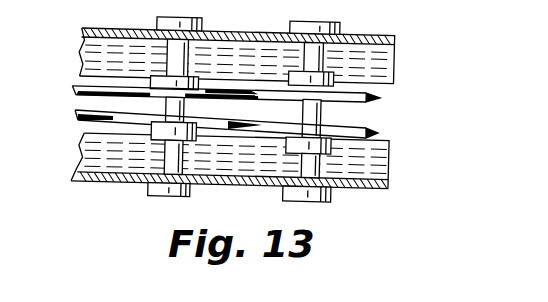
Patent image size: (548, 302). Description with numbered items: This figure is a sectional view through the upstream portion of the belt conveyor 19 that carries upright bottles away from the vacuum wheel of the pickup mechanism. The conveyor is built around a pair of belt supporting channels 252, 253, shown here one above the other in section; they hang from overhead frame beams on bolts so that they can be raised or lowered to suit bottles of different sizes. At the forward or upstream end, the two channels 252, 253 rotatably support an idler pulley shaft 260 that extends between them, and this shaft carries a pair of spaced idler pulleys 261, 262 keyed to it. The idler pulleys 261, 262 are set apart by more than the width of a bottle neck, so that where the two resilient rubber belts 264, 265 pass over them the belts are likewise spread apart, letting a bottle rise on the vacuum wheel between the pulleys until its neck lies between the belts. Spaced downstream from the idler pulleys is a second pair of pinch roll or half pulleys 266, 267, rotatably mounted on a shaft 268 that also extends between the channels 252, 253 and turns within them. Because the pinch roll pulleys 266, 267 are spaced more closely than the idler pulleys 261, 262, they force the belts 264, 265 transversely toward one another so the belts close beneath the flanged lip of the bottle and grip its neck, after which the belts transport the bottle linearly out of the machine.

The belt conveyor 19 is at (59, 131).
The belt supporting channel 252 is at (88, 183).
The belt supporting channel 253 is at (383, 20).
The idler pulley shaft 260 is at (299, 190).
The idler pulley 261 is at (372, 129).
The idler pulley 262 is at (366, 98).
The resilient rubber belt 264 is at (75, 115).
The resilient rubber belt 265 is at (72, 87).
The pinch roll pulley 266 is at (152, 122).
The pinch roll pulley 267 is at (148, 86).
The shaft 268 is at (168, 195).